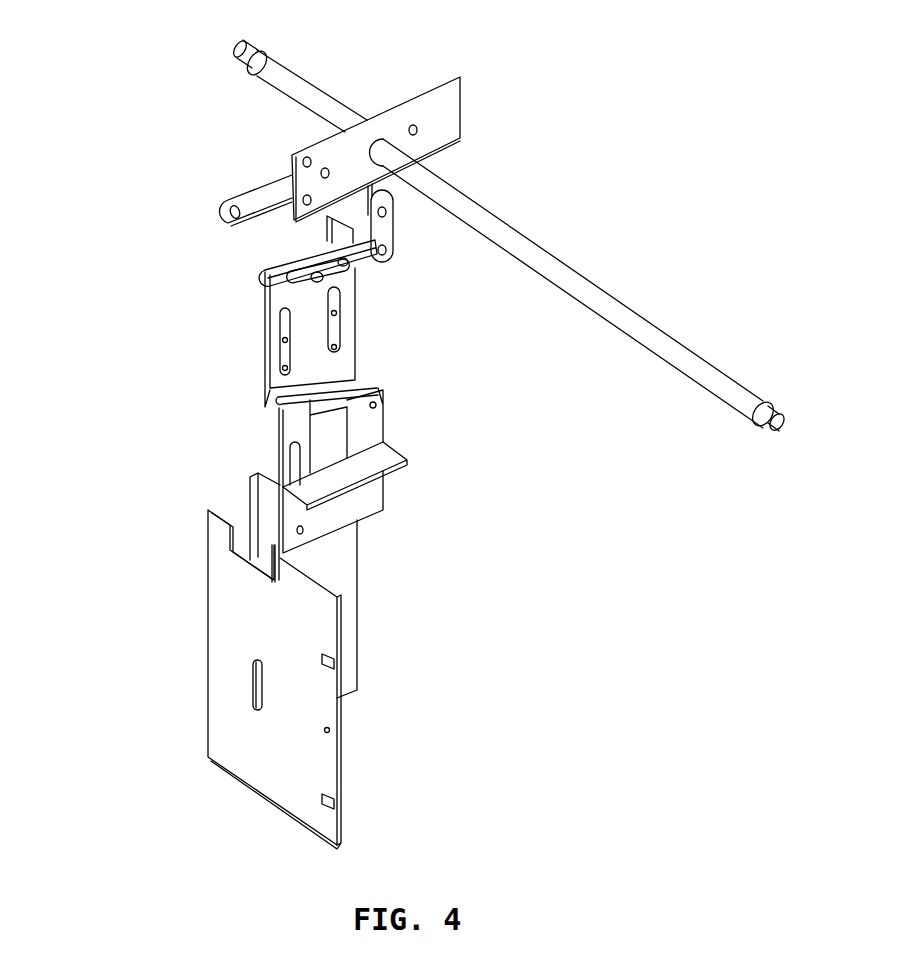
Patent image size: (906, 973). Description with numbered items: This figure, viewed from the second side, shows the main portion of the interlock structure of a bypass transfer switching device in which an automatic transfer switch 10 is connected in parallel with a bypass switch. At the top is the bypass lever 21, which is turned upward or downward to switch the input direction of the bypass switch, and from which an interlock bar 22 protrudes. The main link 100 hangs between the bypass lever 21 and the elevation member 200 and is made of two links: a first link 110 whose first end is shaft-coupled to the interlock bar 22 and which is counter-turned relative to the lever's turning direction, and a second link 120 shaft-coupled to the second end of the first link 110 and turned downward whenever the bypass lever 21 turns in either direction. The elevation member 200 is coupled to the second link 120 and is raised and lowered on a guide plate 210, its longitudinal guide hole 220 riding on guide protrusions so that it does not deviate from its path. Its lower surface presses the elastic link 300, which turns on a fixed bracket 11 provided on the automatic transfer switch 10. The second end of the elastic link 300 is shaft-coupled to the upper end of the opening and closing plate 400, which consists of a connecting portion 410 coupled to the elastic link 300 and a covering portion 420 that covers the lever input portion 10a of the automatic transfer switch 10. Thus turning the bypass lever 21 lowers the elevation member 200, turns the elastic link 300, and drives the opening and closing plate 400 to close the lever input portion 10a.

The automatic transfer switch 10 is at (223, 630).
The lever input portion 10a is at (253, 680).
The fixed bracket 11 is at (370, 505).
The bypass lever 21 is at (432, 100).
The interlock bar 22 is at (390, 186).
The main link 100 is at (512, 347).
The first link 110 is at (388, 238).
The second link 120 is at (345, 282).
The elevation member 200 is at (278, 292).
The guide plate 210 is at (295, 251).
The longitudinal guide hole 220 is at (285, 348).
The elastic link 300 is at (328, 402).
The opening and closing plate 400 is at (92, 434).
The connecting portion 410 is at (290, 435).
The covering portion 420 is at (257, 492).